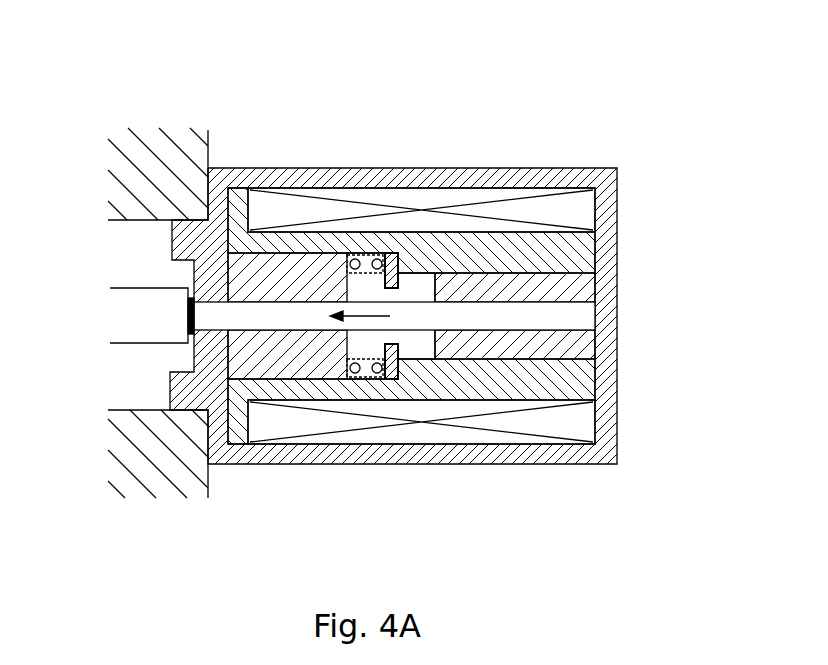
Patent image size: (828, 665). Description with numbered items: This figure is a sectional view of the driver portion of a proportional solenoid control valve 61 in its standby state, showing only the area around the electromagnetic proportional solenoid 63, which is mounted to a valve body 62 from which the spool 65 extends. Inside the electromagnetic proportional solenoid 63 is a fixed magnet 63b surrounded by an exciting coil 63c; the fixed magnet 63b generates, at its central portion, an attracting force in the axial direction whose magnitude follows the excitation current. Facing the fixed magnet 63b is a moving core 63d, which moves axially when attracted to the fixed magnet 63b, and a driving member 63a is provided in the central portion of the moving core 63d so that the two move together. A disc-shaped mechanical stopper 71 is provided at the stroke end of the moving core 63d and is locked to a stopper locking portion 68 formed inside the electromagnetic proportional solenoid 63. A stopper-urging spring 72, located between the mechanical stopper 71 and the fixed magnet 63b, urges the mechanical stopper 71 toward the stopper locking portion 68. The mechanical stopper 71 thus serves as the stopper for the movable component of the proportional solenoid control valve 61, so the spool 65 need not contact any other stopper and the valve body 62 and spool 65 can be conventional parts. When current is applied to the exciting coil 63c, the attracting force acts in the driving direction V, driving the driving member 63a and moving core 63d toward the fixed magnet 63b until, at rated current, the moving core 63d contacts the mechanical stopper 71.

The proportional solenoid control valve 61 is at (444, 278).
The valve body 62 is at (211, 137).
The electromagnetic proportional solenoid 63 is at (551, 167).
The driving member 63a is at (580, 313).
The fixed magnet 63b is at (315, 358).
The exciting coil 63c is at (348, 423).
The moving core 63d is at (488, 347).
The spool 65 is at (145, 303).
The stopper locking portion 68 is at (400, 262).
The mechanical stopper 71 is at (389, 252).
The stopper-urging spring 72 is at (364, 254).
The driving direction V is at (363, 318).